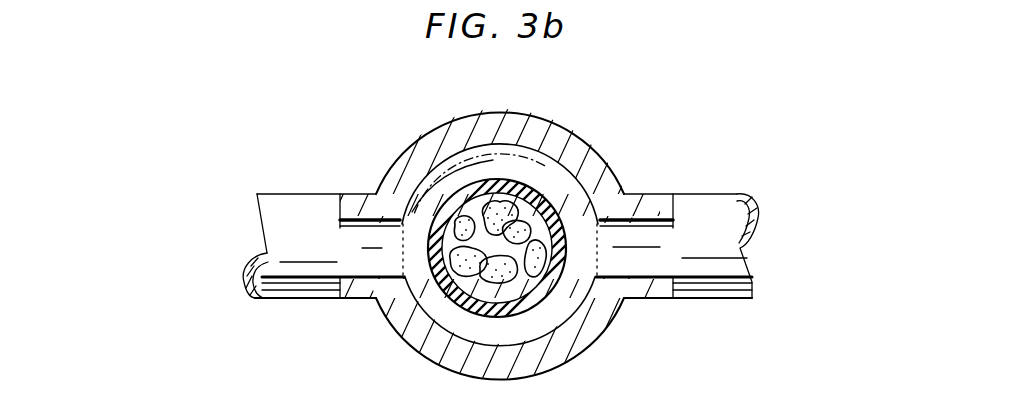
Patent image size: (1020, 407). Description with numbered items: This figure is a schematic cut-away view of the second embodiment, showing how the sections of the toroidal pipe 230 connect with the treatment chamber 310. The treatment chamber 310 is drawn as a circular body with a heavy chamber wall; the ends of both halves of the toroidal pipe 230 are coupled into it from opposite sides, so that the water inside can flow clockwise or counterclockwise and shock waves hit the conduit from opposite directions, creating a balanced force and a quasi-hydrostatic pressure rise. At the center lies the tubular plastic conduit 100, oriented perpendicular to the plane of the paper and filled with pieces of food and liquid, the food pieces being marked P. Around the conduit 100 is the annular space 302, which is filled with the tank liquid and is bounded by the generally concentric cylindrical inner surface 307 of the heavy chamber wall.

The tubular plastic conduit 100 is at (524, 183).
The annular space 302 is at (434, 184).
The cylindrical inner surface 307 is at (550, 324).
The treatment chamber 310 is at (596, 151).
The toroidal pipe 230 is at (255, 299).
The product P is at (455, 280).